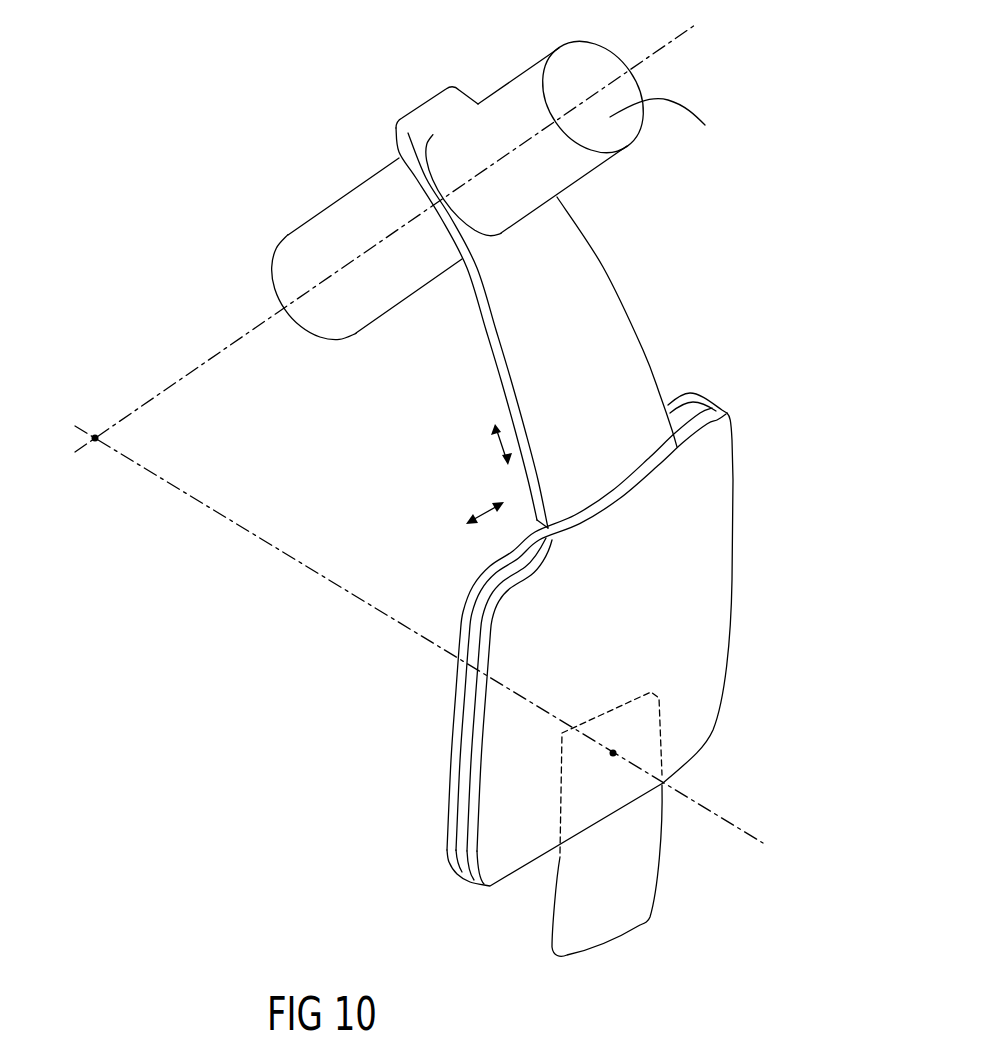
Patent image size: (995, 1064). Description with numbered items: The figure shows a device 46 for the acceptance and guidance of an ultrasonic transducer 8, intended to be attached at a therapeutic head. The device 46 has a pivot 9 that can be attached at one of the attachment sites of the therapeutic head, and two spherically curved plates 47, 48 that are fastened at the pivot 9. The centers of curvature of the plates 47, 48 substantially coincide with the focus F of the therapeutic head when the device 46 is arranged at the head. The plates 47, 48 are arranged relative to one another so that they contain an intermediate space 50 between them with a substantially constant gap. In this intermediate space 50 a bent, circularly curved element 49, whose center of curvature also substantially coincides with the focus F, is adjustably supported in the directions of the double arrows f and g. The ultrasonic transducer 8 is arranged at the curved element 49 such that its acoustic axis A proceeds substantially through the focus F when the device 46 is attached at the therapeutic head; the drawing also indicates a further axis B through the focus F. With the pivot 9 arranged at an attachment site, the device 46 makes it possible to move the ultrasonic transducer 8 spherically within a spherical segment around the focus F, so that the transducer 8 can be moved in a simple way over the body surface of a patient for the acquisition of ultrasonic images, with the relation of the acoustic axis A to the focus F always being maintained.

The ultrasonic transducer 8 is at (492, 113).
The pivot 9 is at (622, 878).
The device 46 is at (775, 268).
The spherically curved plate 47 is at (690, 585).
The spherically curved plate 48 is at (687, 393).
The bent, circularly curved element 49 is at (584, 290).
The intermediate space 50 is at (472, 752).
The acoustic axis A is at (670, 45).
The axis B is at (720, 820).
The focus F is at (93, 433).
The double arrow direction f is at (488, 508).
The double arrow direction g is at (497, 440).